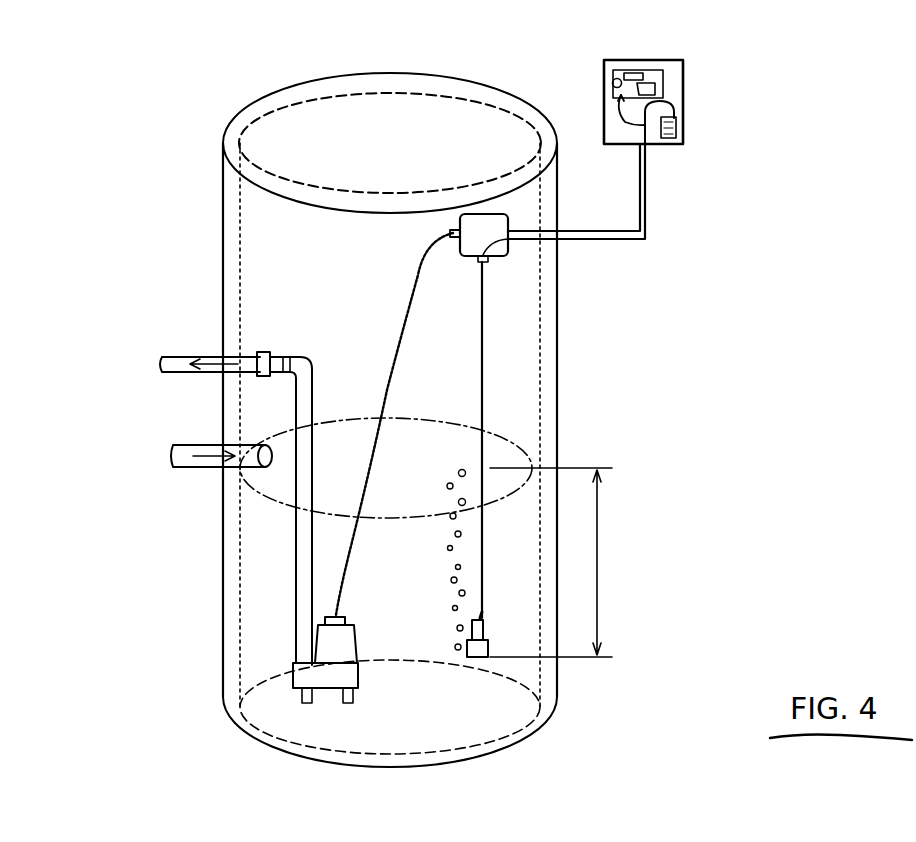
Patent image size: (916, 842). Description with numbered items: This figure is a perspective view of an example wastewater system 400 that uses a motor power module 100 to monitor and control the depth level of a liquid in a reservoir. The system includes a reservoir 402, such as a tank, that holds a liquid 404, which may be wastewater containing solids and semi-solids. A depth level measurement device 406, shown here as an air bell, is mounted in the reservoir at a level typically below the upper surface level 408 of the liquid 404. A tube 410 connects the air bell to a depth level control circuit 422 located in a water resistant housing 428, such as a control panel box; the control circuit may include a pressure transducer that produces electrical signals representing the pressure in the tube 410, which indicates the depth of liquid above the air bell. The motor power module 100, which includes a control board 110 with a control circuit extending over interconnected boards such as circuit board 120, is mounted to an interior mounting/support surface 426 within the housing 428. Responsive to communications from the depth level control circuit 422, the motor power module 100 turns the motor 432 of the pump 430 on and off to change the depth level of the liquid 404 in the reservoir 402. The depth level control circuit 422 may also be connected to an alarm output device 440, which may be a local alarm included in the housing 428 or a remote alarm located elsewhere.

The wastewater system 400 is at (790, 108).
The reservoir 402 is at (232, 596).
The liquid 404 is at (268, 552).
The depth level measurement device 406 is at (490, 637).
The upper surface level 408 is at (403, 518).
The tube 410 is at (641, 132).
The motor power module 100 is at (662, 85).
The control board 110 is at (480, 370).
The circuit board 120 is at (664, 72).
The depth level control circuit 422 is at (628, 68).
The interior mounting/support surface 426 is at (653, 68).
The water resistant housing 428 is at (614, 62).
The pump 430 is at (345, 682).
The motor 432 is at (342, 642).
The alarm output device 440 is at (604, 85).